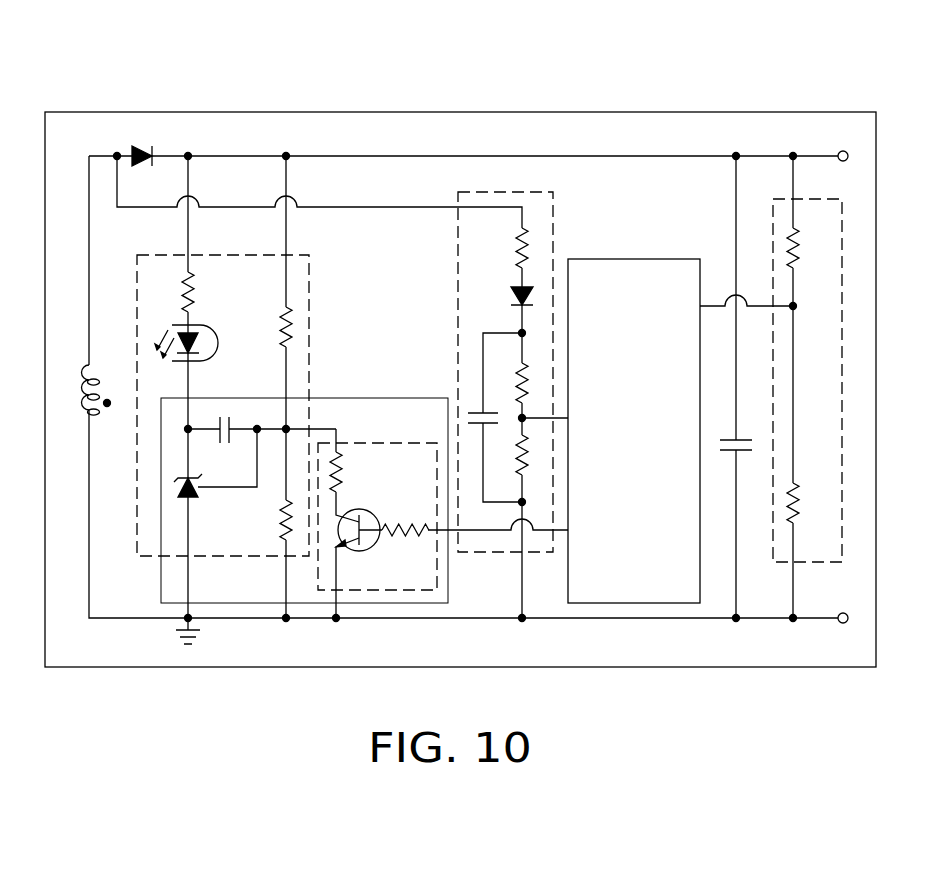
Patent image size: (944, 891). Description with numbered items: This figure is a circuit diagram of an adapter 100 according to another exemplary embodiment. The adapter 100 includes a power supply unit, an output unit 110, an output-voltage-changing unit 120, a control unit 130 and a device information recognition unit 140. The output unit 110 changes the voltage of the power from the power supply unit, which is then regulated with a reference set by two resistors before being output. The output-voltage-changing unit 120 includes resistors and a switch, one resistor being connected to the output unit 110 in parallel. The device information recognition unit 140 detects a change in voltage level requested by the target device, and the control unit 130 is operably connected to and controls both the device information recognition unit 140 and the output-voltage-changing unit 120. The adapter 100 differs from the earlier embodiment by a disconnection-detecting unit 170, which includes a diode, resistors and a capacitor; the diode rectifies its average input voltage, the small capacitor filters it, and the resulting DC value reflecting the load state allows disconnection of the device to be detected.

The adapter 100 is at (488, 38).
The output unit 110 is at (309, 289).
The output-voltage-changing unit 120 is at (362, 443).
The control unit 130 is at (642, 259).
The device information recognition unit 140 is at (805, 199).
The disconnection-detecting unit 170 is at (553, 222).